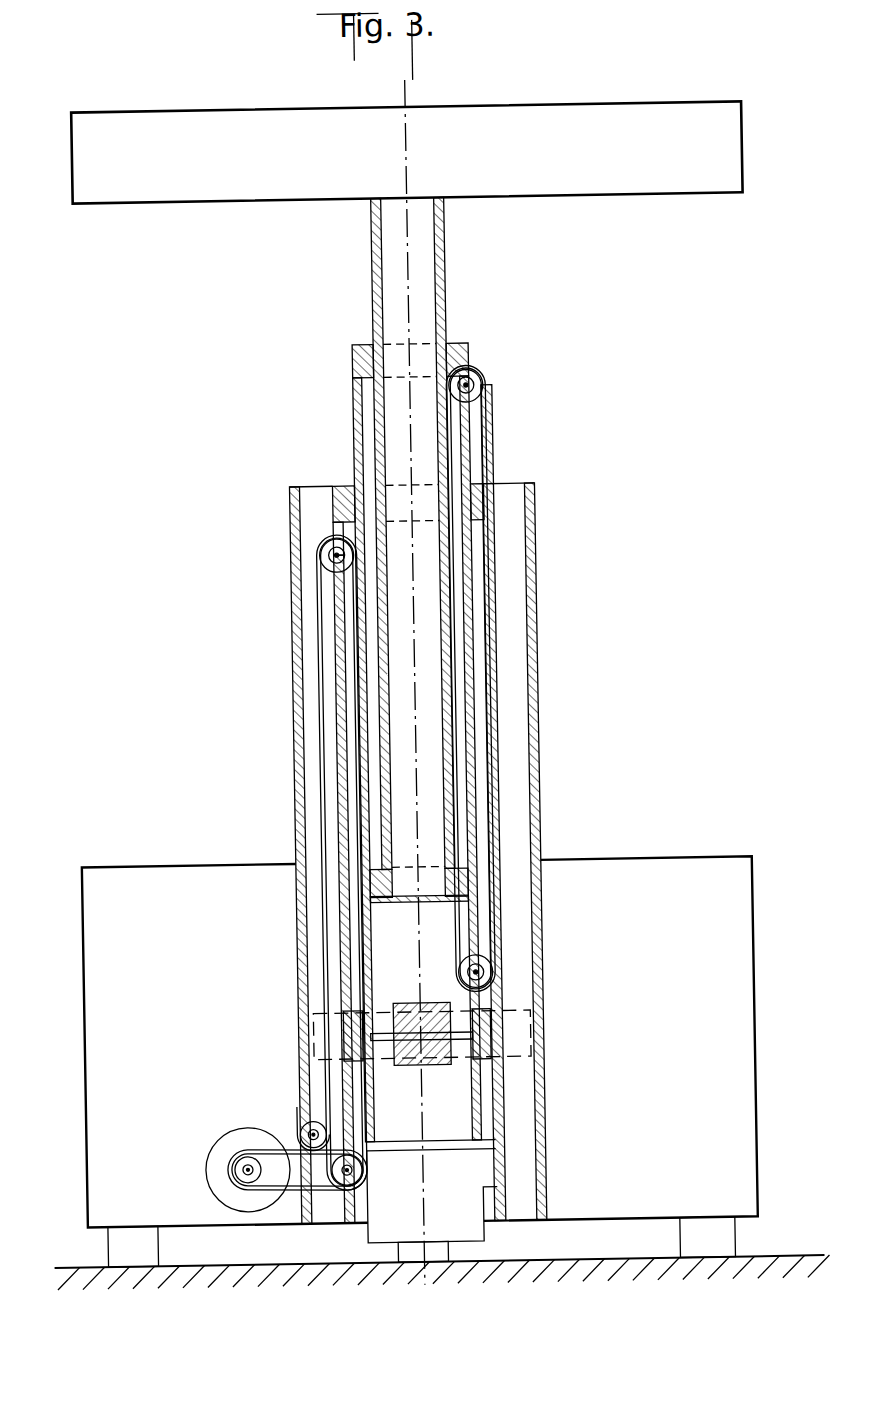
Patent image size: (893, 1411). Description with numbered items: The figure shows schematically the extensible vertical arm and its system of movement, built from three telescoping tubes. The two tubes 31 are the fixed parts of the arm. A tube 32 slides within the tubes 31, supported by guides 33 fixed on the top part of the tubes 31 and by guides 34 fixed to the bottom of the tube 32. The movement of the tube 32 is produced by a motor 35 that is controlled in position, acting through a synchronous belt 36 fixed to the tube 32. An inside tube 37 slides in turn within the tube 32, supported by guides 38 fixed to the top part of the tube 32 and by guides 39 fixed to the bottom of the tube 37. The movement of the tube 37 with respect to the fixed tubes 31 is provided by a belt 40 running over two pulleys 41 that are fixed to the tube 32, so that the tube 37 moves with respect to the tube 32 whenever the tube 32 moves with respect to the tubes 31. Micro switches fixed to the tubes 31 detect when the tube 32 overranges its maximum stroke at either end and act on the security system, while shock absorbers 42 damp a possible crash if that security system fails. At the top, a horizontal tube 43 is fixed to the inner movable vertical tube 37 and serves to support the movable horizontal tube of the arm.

The tubes 31 is at (283, 556).
The tube 32 is at (348, 411).
The guides 33 is at (333, 485).
The guides 34 is at (487, 1004).
The motor 35 is at (197, 1147).
The synchronous belt 36 is at (288, 1123).
The inside tube 37 is at (442, 278).
The guides 38 is at (350, 345).
The guides 39 is at (359, 871).
The belt 40 is at (481, 448).
The pulleys 41 is at (478, 382).
The shock absorbers 42 is at (387, 1008).
The horizontal tube 43 is at (164, 140).